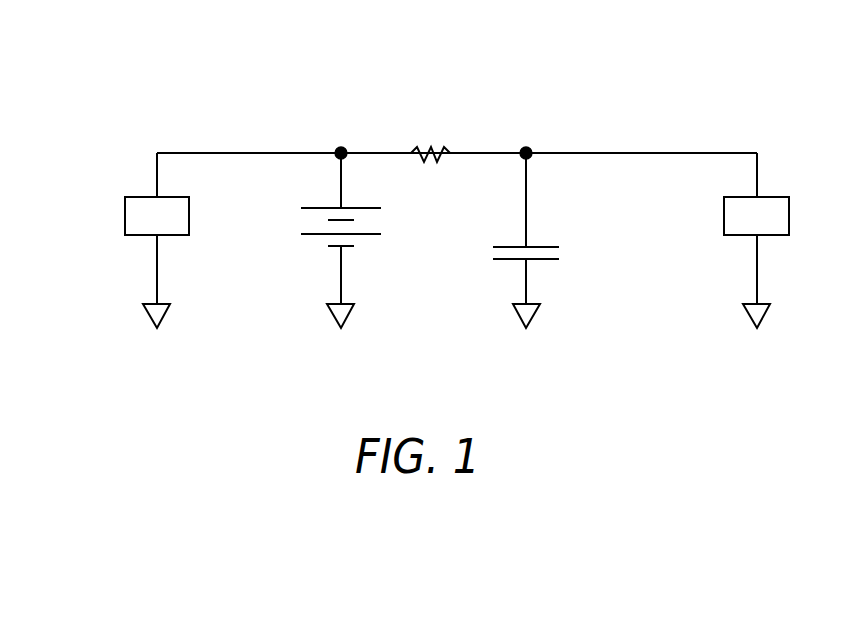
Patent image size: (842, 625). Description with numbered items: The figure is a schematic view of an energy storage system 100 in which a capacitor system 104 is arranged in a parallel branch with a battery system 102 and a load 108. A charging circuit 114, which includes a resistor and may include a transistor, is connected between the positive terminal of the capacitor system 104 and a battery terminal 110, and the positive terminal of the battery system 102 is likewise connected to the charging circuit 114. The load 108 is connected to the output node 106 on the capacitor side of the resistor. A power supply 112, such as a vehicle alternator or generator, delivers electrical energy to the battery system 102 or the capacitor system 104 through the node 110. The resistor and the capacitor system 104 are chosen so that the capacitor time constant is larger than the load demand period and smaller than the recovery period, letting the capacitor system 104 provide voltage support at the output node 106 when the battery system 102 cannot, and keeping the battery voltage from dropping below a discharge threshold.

The energy storage system 100 is at (455, 176).
The battery system 102 is at (310, 200).
The capacitor system 104 is at (568, 252).
The output node 106 is at (525, 150).
The load 108 is at (773, 197).
The battery terminal 110 is at (337, 147).
The power supply 112 is at (138, 198).
The charging circuit 114 is at (419, 158).